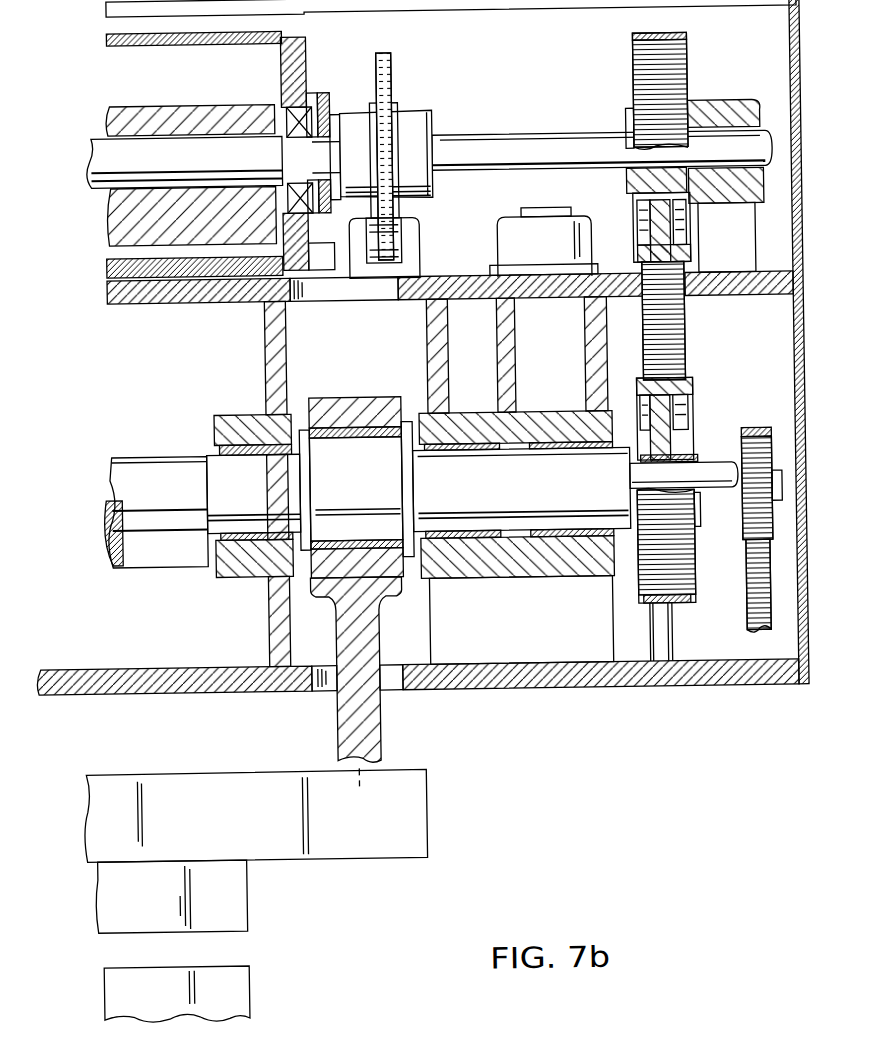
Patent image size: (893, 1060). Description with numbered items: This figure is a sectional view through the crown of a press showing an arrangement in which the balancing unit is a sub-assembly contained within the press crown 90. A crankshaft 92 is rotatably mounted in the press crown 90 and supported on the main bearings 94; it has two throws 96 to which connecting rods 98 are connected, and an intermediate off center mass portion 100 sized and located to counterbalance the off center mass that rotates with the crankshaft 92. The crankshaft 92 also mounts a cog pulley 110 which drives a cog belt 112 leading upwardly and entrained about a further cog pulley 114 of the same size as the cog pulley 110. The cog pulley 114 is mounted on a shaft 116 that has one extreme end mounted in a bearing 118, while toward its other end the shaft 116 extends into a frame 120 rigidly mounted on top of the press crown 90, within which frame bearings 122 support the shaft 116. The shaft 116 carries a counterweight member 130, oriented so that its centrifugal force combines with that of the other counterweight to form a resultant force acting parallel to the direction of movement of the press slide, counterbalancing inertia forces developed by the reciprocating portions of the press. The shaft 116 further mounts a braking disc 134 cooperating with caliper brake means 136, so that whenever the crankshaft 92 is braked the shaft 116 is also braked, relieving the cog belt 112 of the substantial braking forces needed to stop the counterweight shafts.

The press crown 90 is at (570, 690).
The crankshaft 92 is at (489, 518).
The main bearings 94 is at (243, 572).
The throws 96 is at (351, 450).
The connecting rods 98 is at (358, 719).
The off center mass portion 100 is at (140, 465).
The cog pulley 110 is at (682, 575).
The cog belt 112 is at (644, 40).
The cog pulley 114 is at (694, 69).
The shaft 116 is at (542, 144).
The bearing 118 is at (751, 89).
The frame 120 is at (306, 74).
The bearings 122 is at (295, 124).
The counterweight member 130 is at (168, 126).
The braking disc 134 is at (398, 91).
The caliper brake means 136 is at (414, 236).